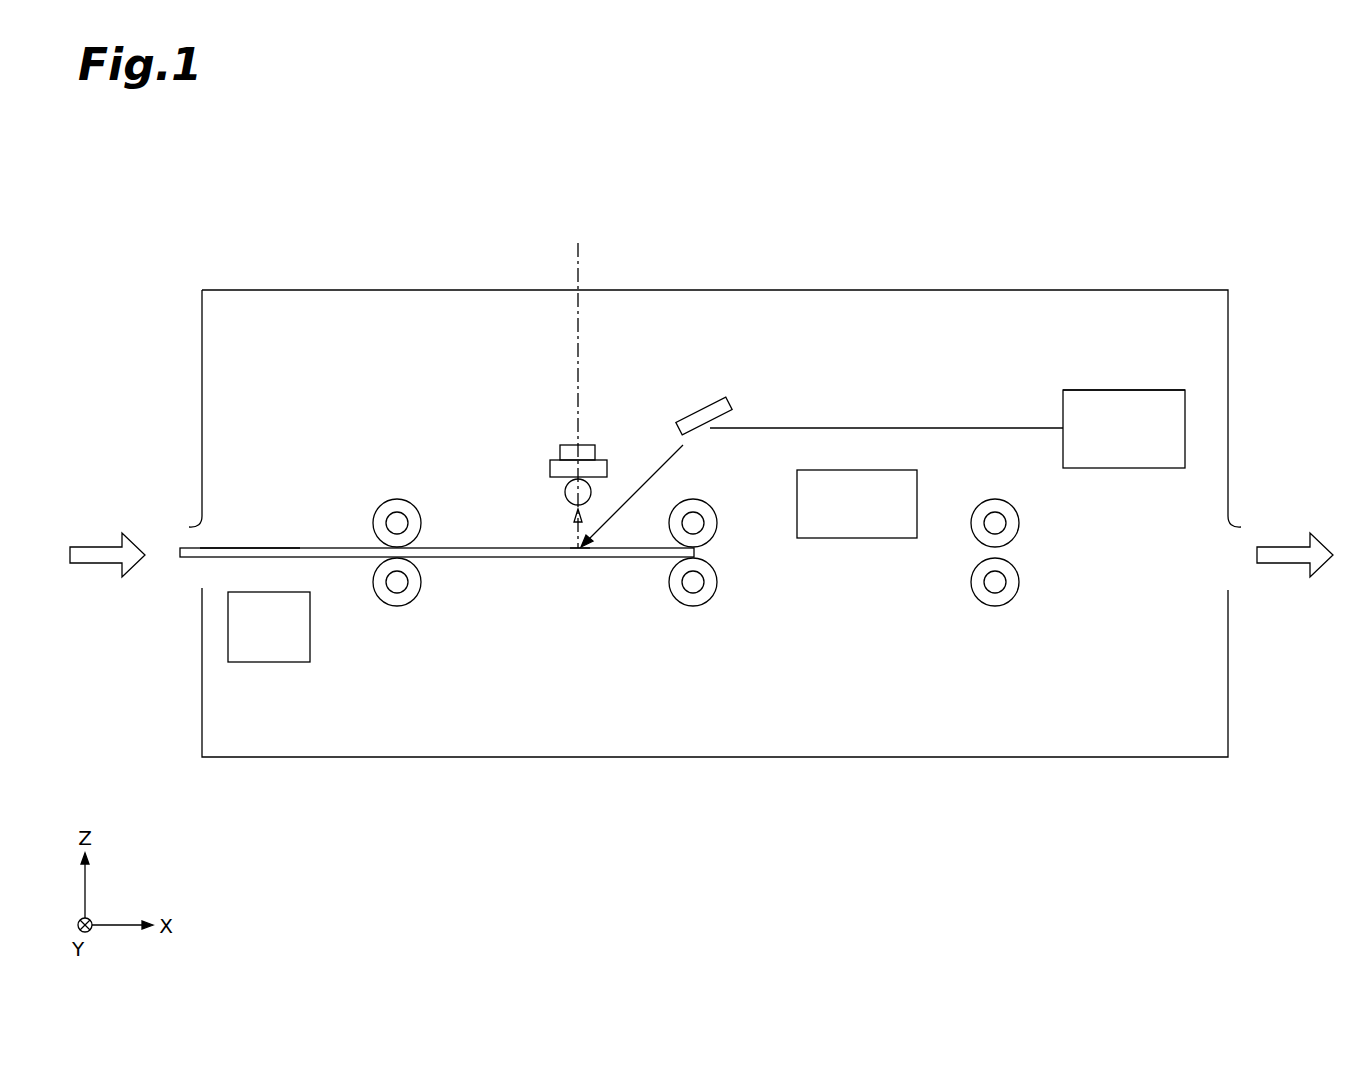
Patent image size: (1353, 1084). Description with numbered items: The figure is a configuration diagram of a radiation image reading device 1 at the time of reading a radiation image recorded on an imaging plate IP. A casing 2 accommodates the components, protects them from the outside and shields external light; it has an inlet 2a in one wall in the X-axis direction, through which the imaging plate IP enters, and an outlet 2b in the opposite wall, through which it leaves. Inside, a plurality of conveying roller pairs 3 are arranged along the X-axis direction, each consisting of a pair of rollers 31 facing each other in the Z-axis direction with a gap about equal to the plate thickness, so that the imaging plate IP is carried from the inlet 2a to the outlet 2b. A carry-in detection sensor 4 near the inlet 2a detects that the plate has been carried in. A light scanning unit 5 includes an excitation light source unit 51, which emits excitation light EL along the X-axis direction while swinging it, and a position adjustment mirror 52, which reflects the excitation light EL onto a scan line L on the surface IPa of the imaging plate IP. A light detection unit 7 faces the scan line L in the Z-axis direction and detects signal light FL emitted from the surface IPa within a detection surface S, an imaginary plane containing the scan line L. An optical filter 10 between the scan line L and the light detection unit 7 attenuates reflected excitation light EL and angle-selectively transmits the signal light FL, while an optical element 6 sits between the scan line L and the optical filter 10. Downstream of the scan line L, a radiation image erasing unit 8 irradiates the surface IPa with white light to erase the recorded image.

The radiation image reading device 1 is at (1132, 188).
The casing 2 is at (273, 290).
The inlet 2a is at (194, 527).
The outlet 2b is at (1236, 527).
The conveying roller pair 3 is at (398, 499).
The roller 31 is at (409, 523).
The carry-in detection sensor 4 is at (268, 663).
The light scanning unit 5 is at (1153, 388).
The excitation light source unit 51 is at (1127, 390).
The position adjustment mirror 52 is at (702, 408).
The optical element 6 is at (565, 498).
The light detection unit 7 is at (573, 445).
The radiation image erasing unit 8 is at (857, 540).
The optical filter 10 is at (550, 466).
The imaging plate IP is at (190, 560).
The surface of the imaging plate IPa is at (265, 547).
The signal light FL is at (575, 547).
The scan line L is at (585, 552).
The excitation light EL is at (910, 428).
The detection surface S is at (580, 256).